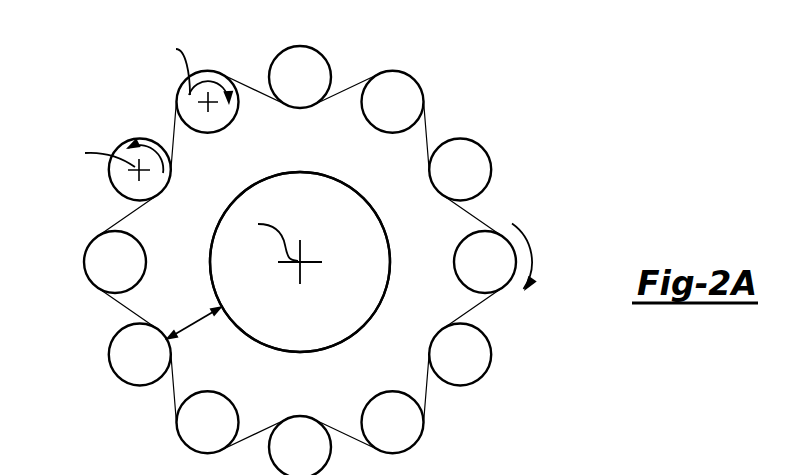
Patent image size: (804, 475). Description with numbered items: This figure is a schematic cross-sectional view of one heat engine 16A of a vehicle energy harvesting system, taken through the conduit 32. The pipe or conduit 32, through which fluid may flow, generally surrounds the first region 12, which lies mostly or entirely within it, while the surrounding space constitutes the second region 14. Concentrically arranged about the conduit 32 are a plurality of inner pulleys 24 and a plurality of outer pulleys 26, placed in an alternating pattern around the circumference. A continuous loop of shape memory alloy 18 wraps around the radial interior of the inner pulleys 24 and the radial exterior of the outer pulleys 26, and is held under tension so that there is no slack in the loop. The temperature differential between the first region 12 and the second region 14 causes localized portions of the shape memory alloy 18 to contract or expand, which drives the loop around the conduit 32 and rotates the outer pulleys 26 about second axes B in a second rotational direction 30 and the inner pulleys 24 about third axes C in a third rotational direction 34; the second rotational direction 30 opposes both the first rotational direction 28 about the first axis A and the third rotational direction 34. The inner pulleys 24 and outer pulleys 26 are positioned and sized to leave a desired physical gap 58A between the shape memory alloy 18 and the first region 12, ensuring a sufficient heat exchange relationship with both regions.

The first region 12 is at (345, 312).
The second region 14 is at (62, 208).
The heat engine 16A is at (105, 96).
The shape memory alloy 18 is at (425, 394).
The inner pulley 24 is at (461, 168).
The outer pulley 26 is at (394, 100).
The first rotational direction 28 is at (532, 253).
The second rotational direction 30 is at (208, 84).
The conduit 32 is at (258, 185).
The third rotational direction 34 is at (144, 140).
The physical gap 58A is at (198, 324).